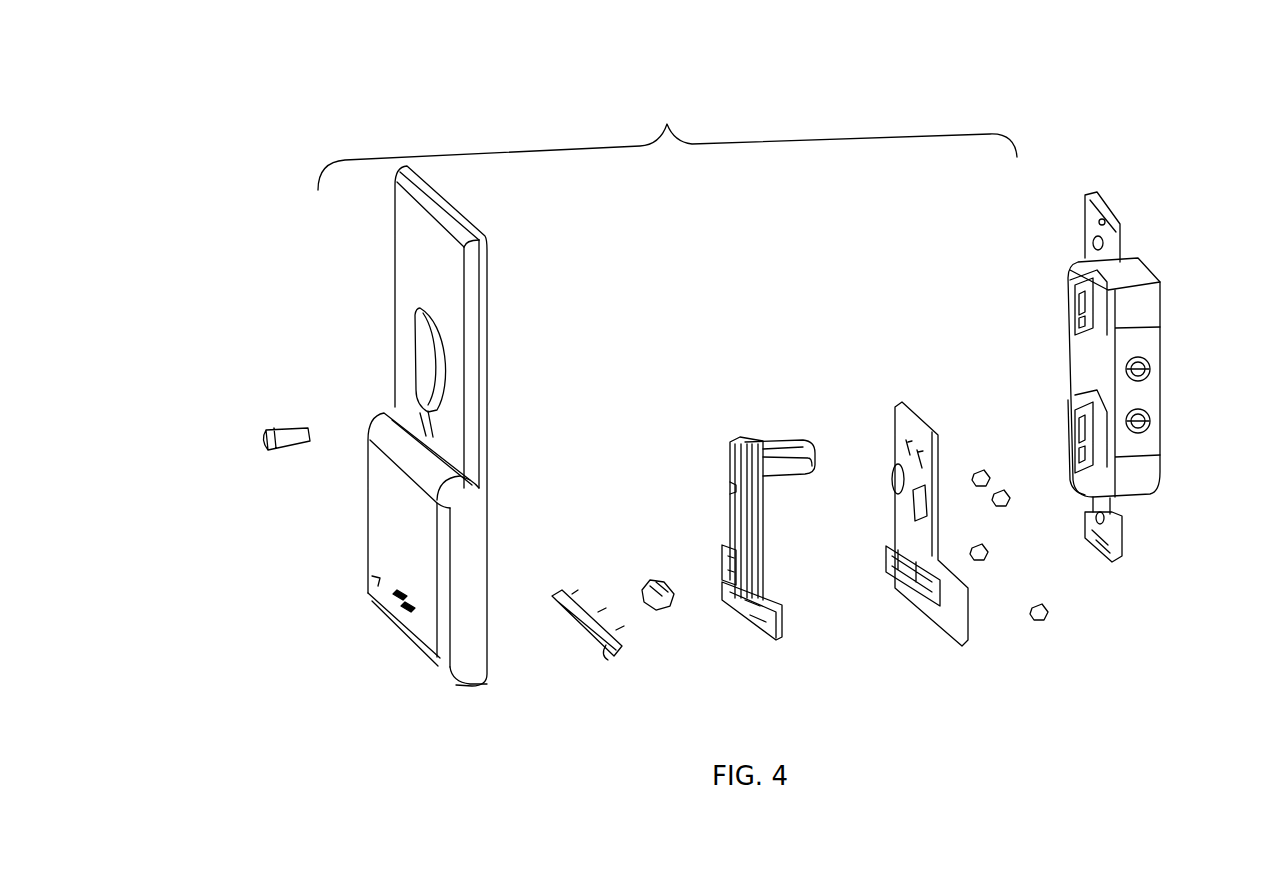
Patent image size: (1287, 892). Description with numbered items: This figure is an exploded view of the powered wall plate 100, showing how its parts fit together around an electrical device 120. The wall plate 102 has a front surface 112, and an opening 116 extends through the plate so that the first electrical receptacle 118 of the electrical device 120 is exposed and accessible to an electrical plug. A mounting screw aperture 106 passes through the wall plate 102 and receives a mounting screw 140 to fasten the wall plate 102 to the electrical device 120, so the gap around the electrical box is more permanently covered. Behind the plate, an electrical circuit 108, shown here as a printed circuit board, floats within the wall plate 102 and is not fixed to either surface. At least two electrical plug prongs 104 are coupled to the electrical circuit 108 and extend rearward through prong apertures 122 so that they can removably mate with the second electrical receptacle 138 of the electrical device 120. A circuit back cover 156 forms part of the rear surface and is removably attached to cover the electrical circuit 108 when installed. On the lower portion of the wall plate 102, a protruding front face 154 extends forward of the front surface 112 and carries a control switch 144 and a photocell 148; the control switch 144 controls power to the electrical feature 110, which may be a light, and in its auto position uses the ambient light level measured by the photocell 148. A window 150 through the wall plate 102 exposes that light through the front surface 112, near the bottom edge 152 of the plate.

The powered wall plate 100 is at (667, 137).
The wall plate 102 is at (467, 270).
The electrical plug prongs 104 is at (800, 464).
The mounting screw aperture 106 is at (428, 430).
The electrical circuit 108 is at (745, 535).
The electrical feature 110 is at (753, 612).
The front surface 112 is at (415, 291).
The opening 116 is at (432, 366).
The first electrical receptacle 118 is at (1088, 310).
The electrical device 120 is at (1132, 395).
The prong apertures 122 is at (920, 450).
The second electrical receptacle 138 is at (1086, 448).
The mounting screw 140 is at (292, 436).
The control switch 144 is at (650, 590).
The photocell 148 is at (376, 582).
The window 150 is at (595, 642).
The bottom edge 152 is at (422, 652).
The protruding front face 154 is at (455, 565).
The circuit back cover 156 is at (918, 540).